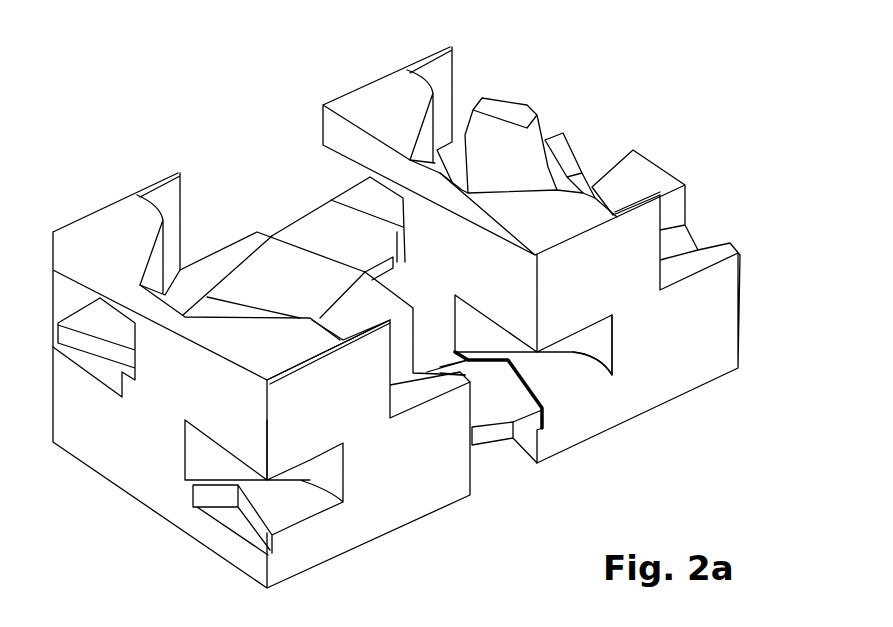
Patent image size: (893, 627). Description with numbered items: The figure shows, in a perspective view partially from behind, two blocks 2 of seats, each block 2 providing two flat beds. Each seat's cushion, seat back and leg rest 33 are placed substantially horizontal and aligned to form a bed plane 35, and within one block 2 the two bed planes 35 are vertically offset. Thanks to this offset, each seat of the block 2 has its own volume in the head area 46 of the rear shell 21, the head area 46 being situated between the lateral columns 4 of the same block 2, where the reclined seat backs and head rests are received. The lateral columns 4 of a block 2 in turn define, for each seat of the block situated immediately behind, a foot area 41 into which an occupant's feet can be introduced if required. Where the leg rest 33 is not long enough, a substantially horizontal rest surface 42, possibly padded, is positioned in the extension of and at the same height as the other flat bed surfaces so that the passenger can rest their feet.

The block 2 is at (497, 70).
The rear shell 21 is at (332, 545).
The leg rest 33 is at (322, 220).
The bed plane 35 is at (290, 273).
The lateral column 4 is at (587, 407).
The foot area 41 is at (556, 369).
The rest surface 42 is at (547, 388).
The head area 46 is at (155, 278).